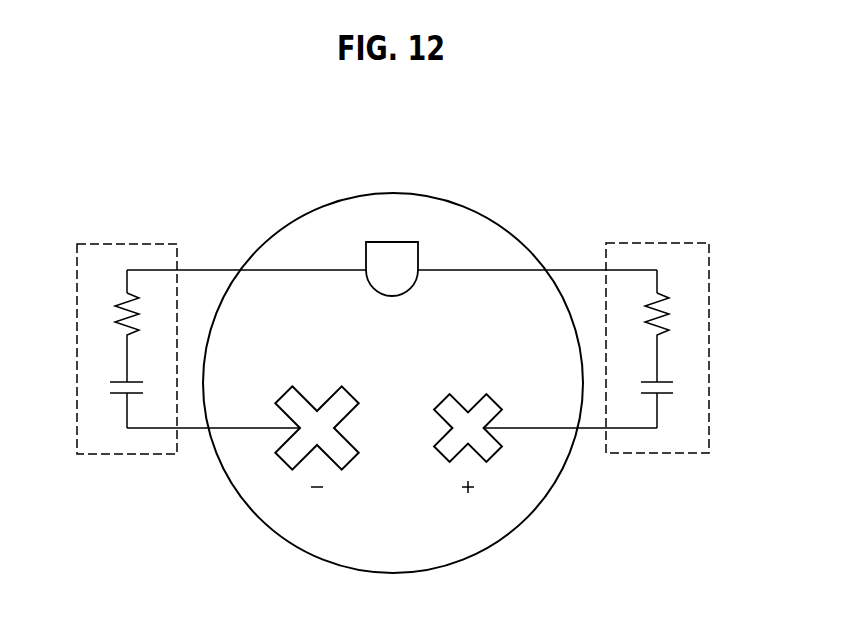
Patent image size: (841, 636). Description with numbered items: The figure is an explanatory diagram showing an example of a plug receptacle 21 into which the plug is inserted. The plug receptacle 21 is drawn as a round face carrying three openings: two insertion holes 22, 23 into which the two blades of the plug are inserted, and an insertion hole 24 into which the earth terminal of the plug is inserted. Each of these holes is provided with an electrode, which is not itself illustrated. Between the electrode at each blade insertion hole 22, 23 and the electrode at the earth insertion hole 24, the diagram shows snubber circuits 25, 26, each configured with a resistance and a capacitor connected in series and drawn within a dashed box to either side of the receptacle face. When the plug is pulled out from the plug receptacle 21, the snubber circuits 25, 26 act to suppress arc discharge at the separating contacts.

The plug receptacle 21 is at (480, 173).
The insertion hole 22 is at (495, 455).
The insertion hole 23 is at (287, 460).
The insertion hole 24 is at (418, 249).
The snubber circuit 25 is at (670, 243).
The snubber circuit 26 is at (128, 243).